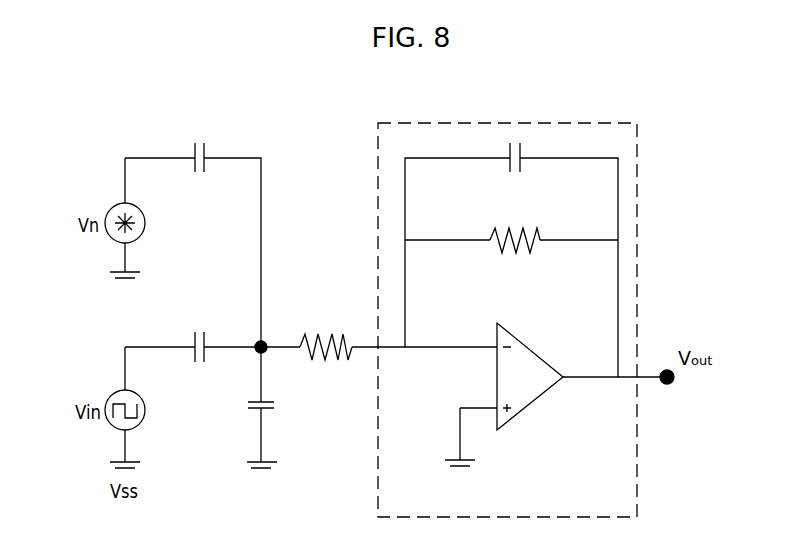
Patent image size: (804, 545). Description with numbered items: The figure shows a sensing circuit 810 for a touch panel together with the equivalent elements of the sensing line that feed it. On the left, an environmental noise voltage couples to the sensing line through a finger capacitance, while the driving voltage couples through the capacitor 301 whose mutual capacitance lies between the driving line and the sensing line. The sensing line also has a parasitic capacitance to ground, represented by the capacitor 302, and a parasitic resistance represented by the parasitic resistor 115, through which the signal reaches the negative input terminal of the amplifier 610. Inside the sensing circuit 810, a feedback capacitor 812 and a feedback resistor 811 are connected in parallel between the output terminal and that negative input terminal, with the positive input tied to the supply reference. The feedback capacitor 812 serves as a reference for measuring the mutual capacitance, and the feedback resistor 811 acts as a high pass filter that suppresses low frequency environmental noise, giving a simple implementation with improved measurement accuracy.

The capacitor 301 is at (190, 172).
The capacitor 302 is at (251, 413).
The parasitic resistor 115 is at (339, 360).
The sensing circuit 810 is at (637, 205).
The feedback resistor 811 is at (520, 228).
The feedback capacitor 812 is at (522, 165).
The amplifier 610 is at (531, 345).